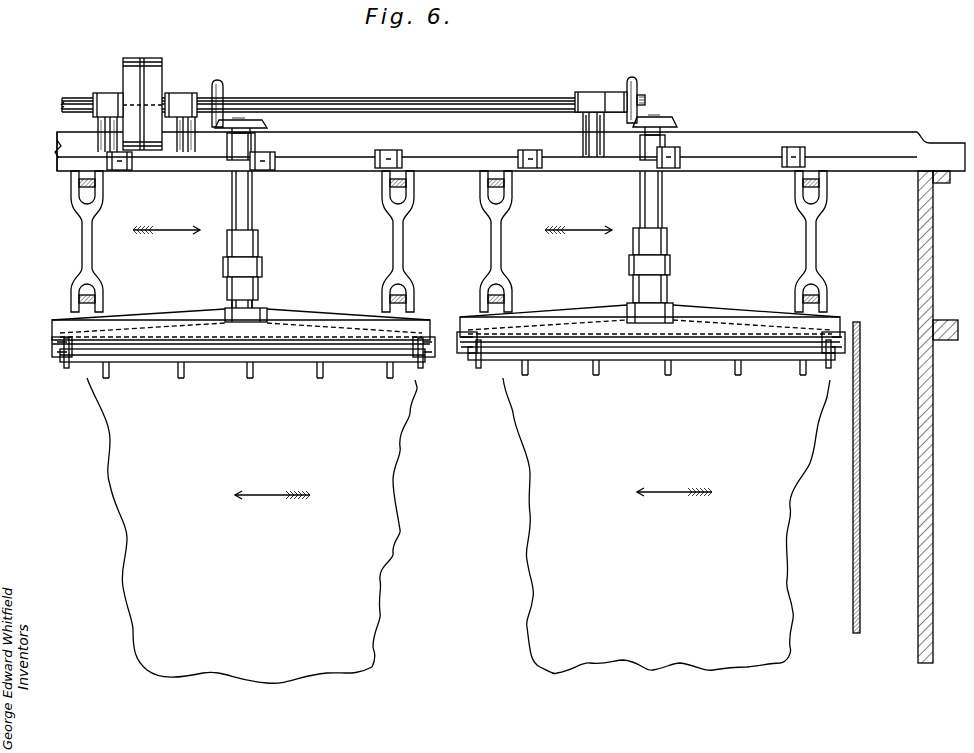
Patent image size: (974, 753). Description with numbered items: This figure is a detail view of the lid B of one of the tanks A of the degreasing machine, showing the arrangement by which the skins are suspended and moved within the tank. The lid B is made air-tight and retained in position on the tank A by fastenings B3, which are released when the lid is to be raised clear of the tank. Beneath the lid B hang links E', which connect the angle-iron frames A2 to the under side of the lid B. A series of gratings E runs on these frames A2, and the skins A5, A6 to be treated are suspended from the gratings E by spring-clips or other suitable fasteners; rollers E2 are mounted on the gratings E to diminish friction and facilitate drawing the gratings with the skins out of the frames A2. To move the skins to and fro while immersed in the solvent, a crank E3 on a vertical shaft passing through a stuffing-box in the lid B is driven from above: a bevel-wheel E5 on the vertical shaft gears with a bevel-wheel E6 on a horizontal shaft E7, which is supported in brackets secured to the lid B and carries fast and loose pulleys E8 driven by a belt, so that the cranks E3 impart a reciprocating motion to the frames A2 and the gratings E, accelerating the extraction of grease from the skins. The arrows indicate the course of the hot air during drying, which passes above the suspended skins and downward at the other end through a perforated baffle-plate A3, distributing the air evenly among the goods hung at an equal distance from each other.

The lid B is at (510, 151).
The fastenings B3 is at (397, 157).
The tank A is at (569, 245).
The frames A2 is at (690, 293).
The baffle-plate A3 is at (857, 512).
The skins A5 is at (252, 530).
The skins A6 is at (666, 526).
The gratings E is at (446, 373).
The links E' is at (454, 241).
The rollers E2 is at (64, 356).
The crank E3 is at (260, 261).
The bevel-wheel E5 is at (270, 122).
The bevel-wheel E6 is at (232, 77).
The horizontal shaft E7 is at (362, 80).
The fast and loose pulleys E8 is at (155, 48).